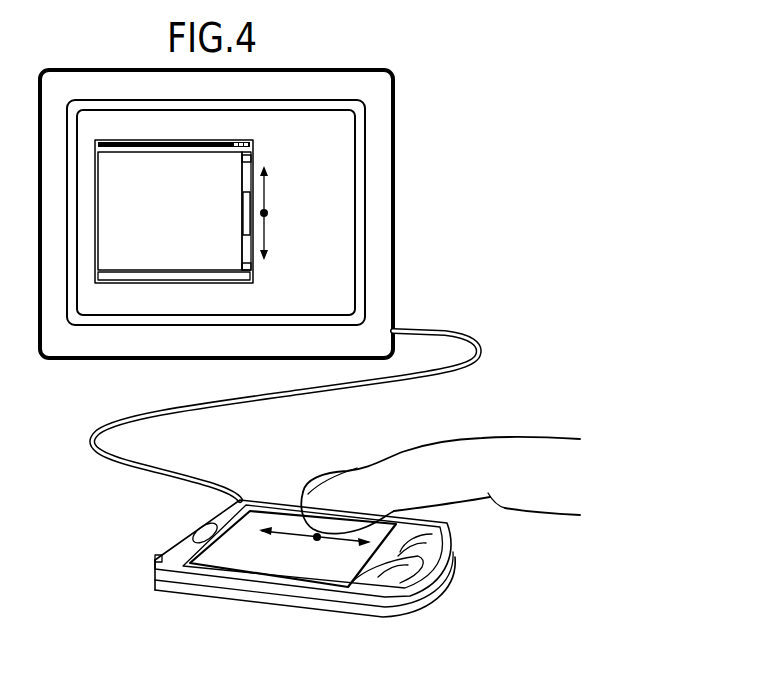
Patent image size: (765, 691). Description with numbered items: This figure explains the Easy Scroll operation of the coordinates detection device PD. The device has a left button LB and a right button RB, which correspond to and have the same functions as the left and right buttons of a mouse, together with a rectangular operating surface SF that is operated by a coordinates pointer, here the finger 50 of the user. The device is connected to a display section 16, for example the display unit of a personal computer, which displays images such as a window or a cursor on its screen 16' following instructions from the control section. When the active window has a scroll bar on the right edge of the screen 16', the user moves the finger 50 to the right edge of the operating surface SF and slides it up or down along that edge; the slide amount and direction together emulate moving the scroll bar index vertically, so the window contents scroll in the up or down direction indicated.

The display section 16 is at (240, 194).
The screen 16' is at (278, 211).
The finger 50 is at (522, 457).
The coordinates detection device PD is at (326, 577).
The operating surface SF is at (288, 565).
The right button RB is at (413, 548).
The left button LB is at (390, 575).